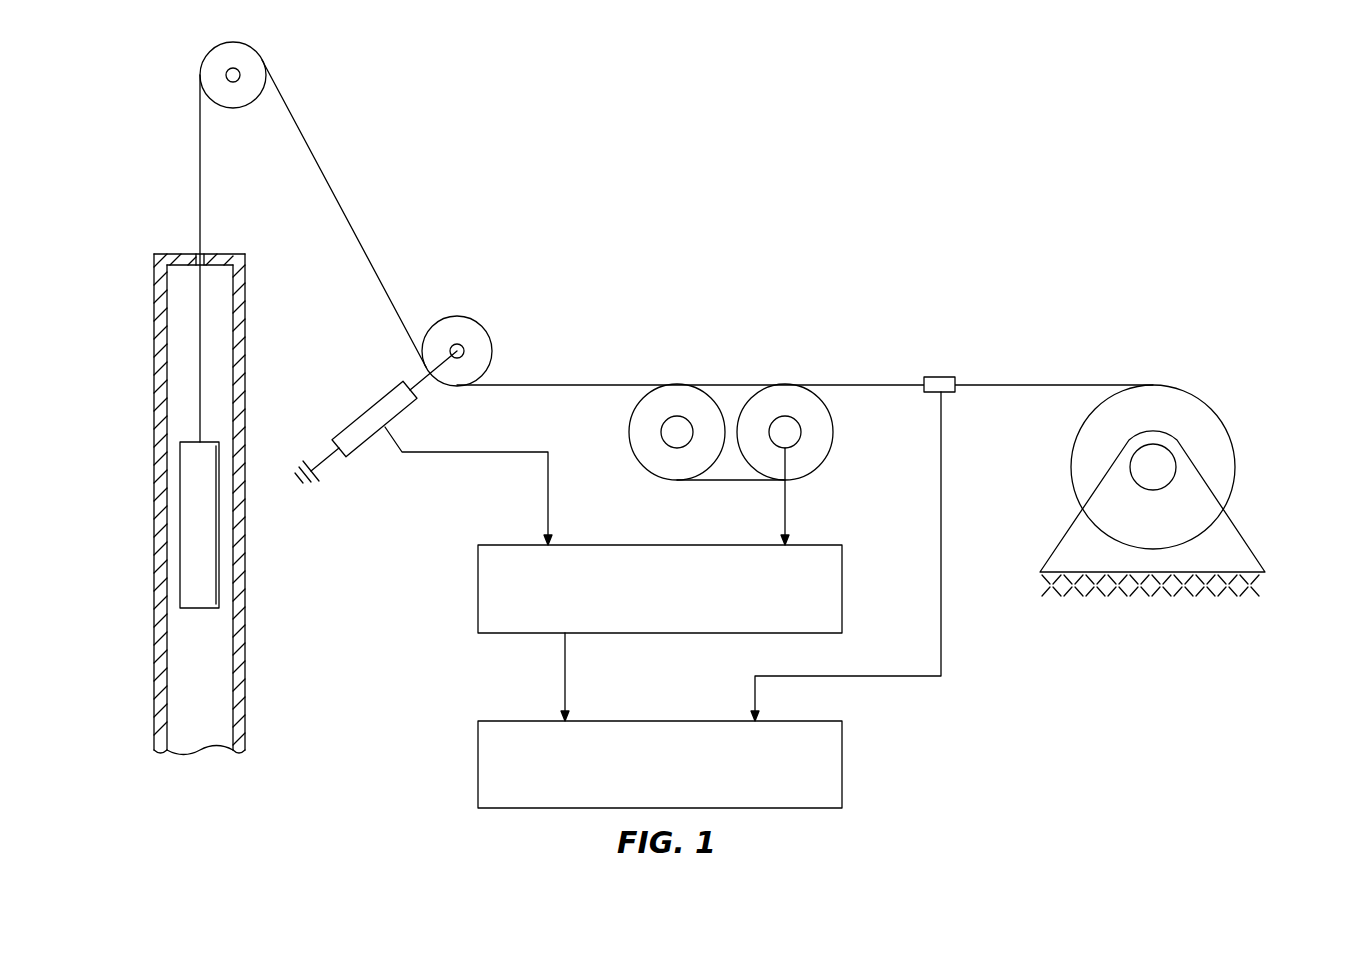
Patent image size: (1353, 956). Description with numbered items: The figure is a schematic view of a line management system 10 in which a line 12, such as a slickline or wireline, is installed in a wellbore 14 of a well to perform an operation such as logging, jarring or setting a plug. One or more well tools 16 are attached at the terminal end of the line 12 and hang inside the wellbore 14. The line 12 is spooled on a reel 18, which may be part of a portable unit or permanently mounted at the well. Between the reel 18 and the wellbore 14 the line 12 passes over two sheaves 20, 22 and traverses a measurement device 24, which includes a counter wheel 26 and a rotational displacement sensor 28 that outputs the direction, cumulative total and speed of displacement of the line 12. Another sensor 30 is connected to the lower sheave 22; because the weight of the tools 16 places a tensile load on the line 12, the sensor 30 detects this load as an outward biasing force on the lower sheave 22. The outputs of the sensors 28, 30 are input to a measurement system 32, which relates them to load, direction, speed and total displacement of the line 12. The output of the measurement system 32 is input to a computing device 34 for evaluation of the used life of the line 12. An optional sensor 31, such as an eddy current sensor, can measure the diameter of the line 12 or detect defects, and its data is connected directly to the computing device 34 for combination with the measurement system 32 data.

The line management system 10 is at (1150, 158).
The line 12 is at (350, 218).
The wellbore 14 is at (218, 633).
The well tools 16 is at (220, 545).
The reel 18 is at (1070, 447).
The sheave 20 is at (227, 108).
The lower sheave 22 is at (480, 323).
The measurement device 24 is at (765, 464).
The counter wheel 26 is at (833, 421).
The rotational displacement sensor 28 is at (800, 437).
The sensor 30 is at (350, 420).
The sensor 31 is at (948, 375).
The measurement system 32 is at (670, 600).
The computing device 34 is at (670, 775).